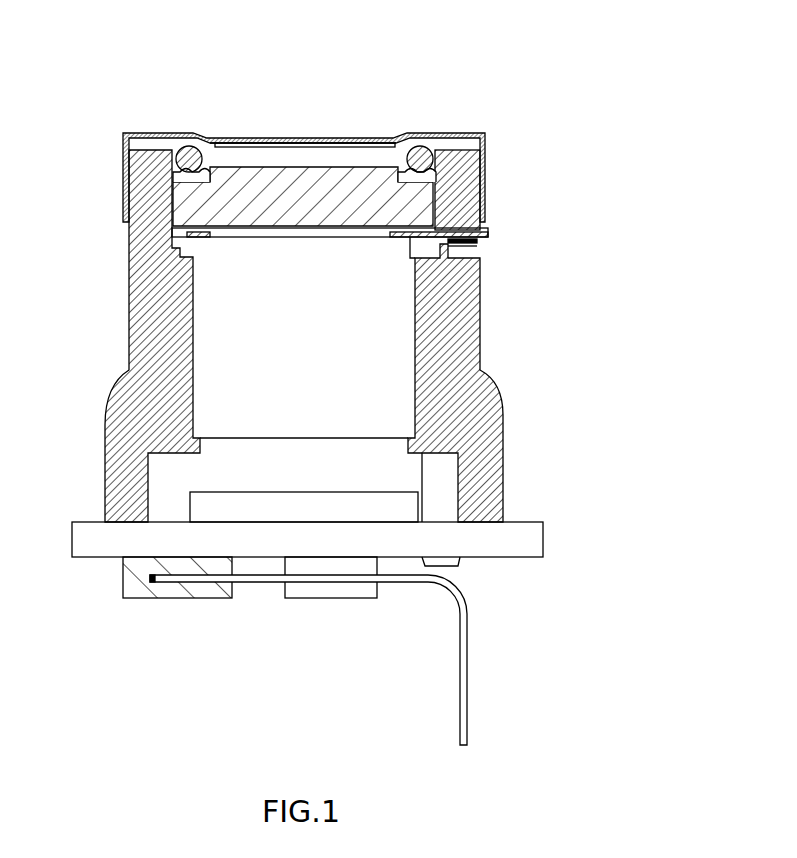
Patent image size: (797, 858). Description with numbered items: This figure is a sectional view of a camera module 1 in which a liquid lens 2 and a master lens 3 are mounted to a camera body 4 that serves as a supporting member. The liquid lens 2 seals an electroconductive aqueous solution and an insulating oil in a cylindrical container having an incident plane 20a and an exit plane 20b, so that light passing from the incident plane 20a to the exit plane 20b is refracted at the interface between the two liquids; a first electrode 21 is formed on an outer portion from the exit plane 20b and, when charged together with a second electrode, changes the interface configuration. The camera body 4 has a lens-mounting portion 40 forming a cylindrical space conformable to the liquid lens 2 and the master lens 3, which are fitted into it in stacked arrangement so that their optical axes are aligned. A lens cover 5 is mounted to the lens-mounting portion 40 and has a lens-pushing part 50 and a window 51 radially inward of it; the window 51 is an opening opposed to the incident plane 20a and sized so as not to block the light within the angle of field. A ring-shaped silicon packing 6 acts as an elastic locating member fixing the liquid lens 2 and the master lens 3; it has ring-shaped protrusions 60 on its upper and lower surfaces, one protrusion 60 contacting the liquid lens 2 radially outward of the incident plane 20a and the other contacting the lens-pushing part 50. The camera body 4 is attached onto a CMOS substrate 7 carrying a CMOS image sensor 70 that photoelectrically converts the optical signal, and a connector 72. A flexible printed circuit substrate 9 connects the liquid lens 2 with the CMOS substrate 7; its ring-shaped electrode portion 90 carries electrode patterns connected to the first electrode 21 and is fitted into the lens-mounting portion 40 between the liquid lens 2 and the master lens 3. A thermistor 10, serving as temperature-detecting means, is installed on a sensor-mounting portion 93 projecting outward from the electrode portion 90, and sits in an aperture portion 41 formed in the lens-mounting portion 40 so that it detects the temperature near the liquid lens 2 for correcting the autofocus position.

The camera module 1 is at (363, 116).
The liquid lens 2 is at (432, 204).
The master lens 3 is at (210, 413).
The camera body 4 is at (338, 290).
The lens cover 5 is at (346, 142).
The packing 6 is at (165, 140).
The CMOS substrate 7 is at (543, 540).
The flexible printed circuit substrate 9 is at (468, 648).
The thermistor 10 is at (490, 240).
The incident plane 20a is at (287, 167).
The exit plane 20b is at (275, 237).
The first electrode 21 is at (455, 262).
The lens-mounting portion 40 is at (320, 290).
The aperture portion 41 is at (480, 255).
The lens-pushing part 50 is at (452, 133).
The window 51 is at (230, 143).
The protrusions 60 is at (187, 148).
The CMOS image sensor 70 is at (210, 507).
The connector 72 is at (168, 597).
The electrode portion 90 is at (137, 263).
The sensor-mounting portion 93 is at (480, 270).